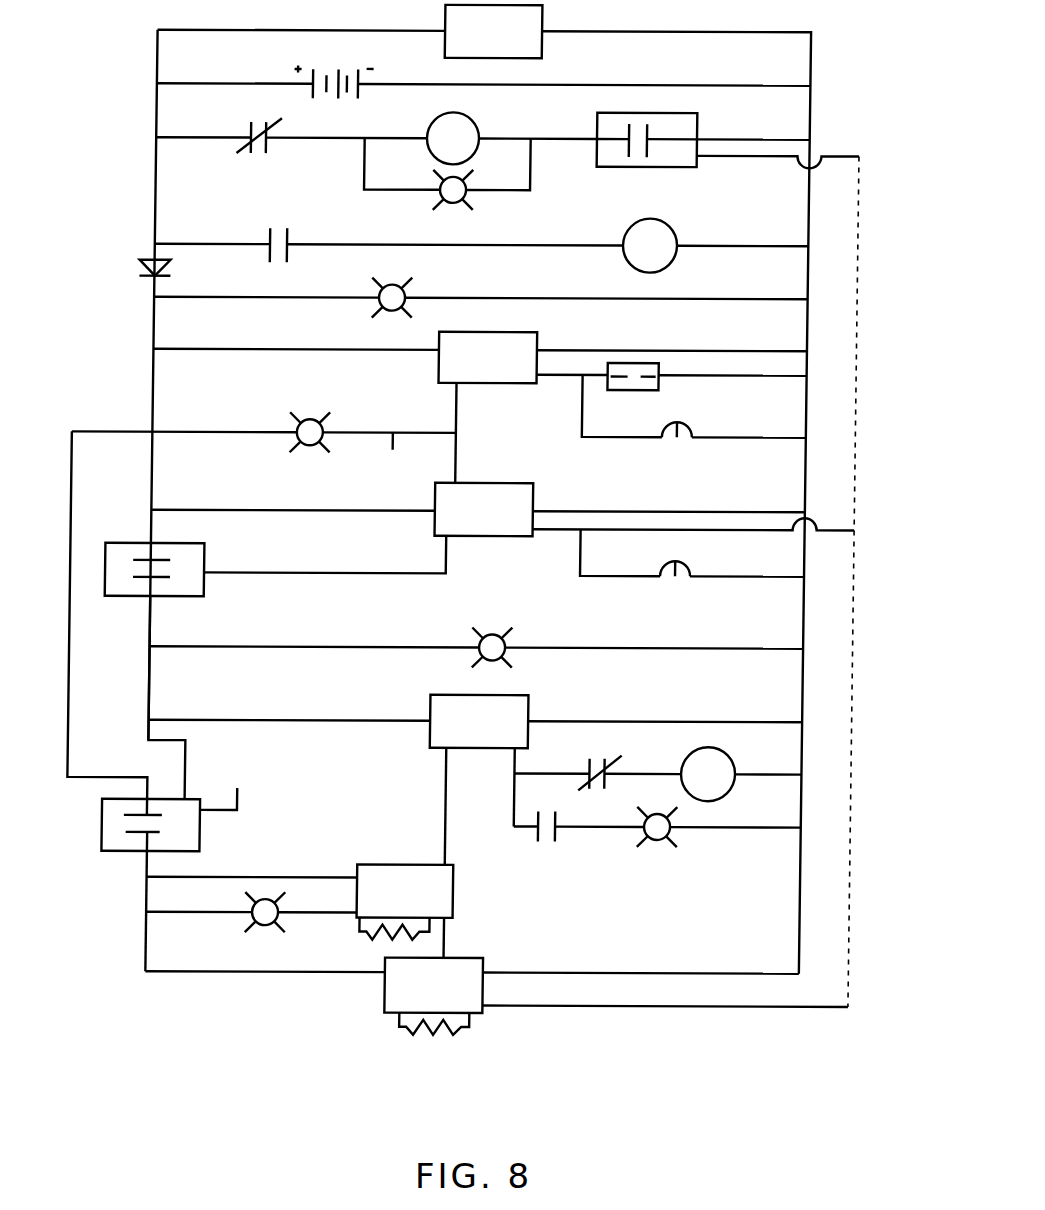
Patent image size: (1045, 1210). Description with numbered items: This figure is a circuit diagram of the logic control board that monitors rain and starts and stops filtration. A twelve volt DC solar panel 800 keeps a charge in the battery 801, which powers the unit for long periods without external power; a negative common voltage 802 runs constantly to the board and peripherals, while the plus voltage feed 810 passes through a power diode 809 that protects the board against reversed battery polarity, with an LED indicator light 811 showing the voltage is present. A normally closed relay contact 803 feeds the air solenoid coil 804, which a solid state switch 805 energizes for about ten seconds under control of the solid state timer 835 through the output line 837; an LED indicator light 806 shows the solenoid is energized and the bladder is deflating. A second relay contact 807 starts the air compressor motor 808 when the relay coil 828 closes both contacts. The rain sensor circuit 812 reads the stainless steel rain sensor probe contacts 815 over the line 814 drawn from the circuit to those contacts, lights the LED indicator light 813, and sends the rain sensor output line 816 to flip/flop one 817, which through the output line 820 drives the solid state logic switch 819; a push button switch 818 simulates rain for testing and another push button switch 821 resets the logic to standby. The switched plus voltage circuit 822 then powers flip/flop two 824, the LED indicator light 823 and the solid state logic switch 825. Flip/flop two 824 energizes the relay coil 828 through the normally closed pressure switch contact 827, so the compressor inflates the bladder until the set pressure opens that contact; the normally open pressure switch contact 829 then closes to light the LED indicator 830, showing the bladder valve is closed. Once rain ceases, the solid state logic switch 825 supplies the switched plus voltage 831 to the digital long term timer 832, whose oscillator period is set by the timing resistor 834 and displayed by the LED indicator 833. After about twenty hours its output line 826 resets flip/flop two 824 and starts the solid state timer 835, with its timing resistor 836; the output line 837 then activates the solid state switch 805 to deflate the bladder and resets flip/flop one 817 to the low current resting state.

The solar panel 800 is at (494, 31).
The battery 801 is at (484, 69).
The common voltage 802 is at (478, 490).
The relay contact 803 is at (292, 122).
The air solenoid coil 804 is at (512, 138).
The solid state switch 805 is at (704, 128).
The LED indicator light 806 is at (446, 186).
The relay contact 807 is at (389, 231).
The air compressor motor 808 is at (716, 246).
The power diode 809 is at (134, 259).
The plus voltage feed 810 is at (124, 414).
The LED indicator light 811 is at (481, 287).
The rain sensor circuit 812 is at (480, 358).
The LED indicator light 813 is at (262, 600).
The conductor 814 is at (671, 408).
The rain sensor probe contacts 815 is at (633, 390).
The rain sensor output line 816 is at (374, 600).
The flip/flop one 817 is at (478, 510).
The push button switch 818 is at (693, 425).
The solid state logic switch 819 is at (185, 568).
The output line 820 is at (325, 553).
The push button switch 821 is at (692, 570).
The switched plus voltage circuit 822 is at (112, 668).
The LED indicator light 823 is at (476, 637).
The flip/flop two 824 is at (475, 722).
The solid state logic switch 825 is at (177, 828).
The output line 826 is at (449, 852).
The pressure switch contact 827 is at (598, 779).
The relay coil 828 is at (741, 774).
The pressure switch contact 829 is at (578, 843).
The LED indicator 830 is at (717, 841).
The switched plus voltage 831 is at (201, 902).
The digital long term timer 832 is at (405, 891).
The LED indicator 833 is at (251, 931).
The timing resistor 834 is at (385, 939).
The solid state timer 835 is at (472, 986).
The timing resistor 836 is at (434, 1039).
The output line 837 is at (670, 603).